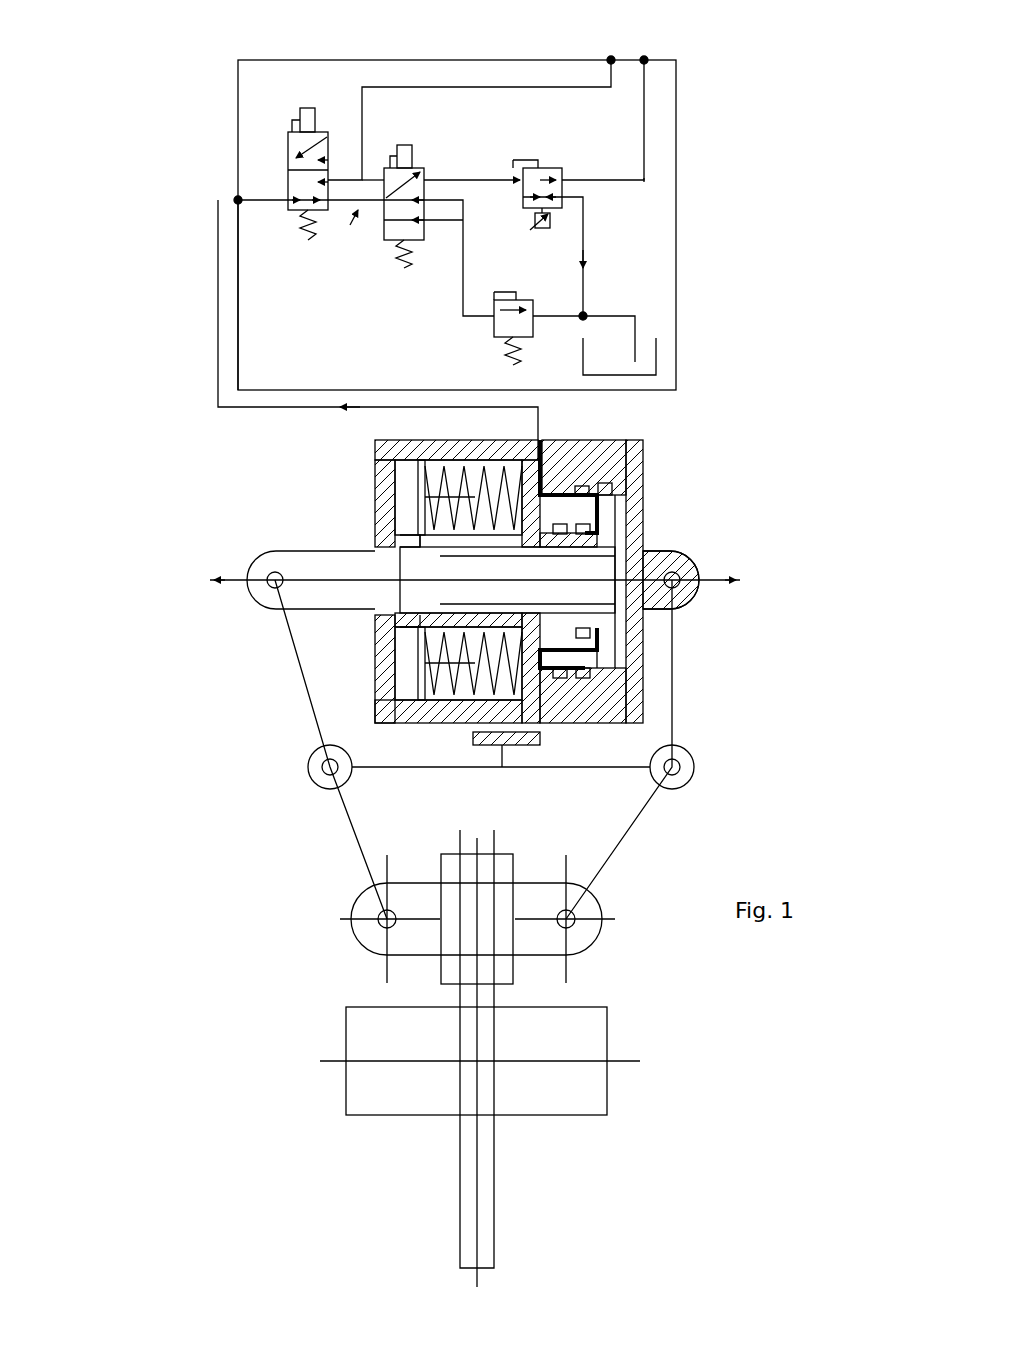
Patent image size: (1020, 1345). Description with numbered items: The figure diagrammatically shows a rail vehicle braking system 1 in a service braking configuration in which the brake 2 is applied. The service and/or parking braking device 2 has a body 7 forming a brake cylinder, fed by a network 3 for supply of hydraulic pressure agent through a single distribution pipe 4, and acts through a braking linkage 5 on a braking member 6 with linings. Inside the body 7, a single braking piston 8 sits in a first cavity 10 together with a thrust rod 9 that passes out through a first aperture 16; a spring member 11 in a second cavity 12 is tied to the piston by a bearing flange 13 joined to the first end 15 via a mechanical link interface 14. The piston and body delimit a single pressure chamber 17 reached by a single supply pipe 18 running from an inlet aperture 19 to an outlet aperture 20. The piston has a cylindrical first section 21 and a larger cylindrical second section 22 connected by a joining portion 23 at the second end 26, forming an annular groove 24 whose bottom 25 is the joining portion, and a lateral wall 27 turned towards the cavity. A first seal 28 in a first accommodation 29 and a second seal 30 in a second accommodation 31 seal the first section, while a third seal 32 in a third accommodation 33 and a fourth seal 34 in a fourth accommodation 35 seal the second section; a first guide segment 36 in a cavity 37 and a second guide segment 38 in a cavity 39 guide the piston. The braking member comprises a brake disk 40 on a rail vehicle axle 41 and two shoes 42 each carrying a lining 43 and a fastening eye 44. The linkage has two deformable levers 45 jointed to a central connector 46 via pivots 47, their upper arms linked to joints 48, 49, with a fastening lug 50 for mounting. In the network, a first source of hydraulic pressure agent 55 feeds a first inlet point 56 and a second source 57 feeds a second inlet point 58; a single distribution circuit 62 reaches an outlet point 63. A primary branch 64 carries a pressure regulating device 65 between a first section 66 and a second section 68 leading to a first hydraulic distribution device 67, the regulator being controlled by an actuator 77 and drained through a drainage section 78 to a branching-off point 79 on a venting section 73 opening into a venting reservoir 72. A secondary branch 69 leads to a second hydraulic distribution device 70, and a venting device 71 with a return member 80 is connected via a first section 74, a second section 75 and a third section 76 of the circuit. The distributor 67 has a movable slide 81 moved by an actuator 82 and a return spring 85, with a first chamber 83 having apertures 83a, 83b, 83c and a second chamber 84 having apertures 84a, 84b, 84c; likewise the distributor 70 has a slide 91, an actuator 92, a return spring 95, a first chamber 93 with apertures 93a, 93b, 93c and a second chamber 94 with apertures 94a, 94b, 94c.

The rail vehicle braking system 1 is at (148, 428).
The service and/or parking braking device 2 is at (720, 478).
The network for supply of hydraulic pressure agent 3 is at (238, 60).
The single distribution pipe 4 is at (218, 290).
The braking linkage 5 is at (155, 628).
The braking member 6 is at (178, 930).
The body 7 is at (600, 490).
The braking piston 8 is at (615, 535).
The thrust rod 9 is at (305, 551).
The first cavity 10 is at (643, 650).
The spring member 11 is at (466, 470).
The second cavity 12 is at (421, 462).
The bearing flange 13 is at (395, 478).
The mechanical link interface 14 is at (400, 540).
The first end 15 is at (400, 548).
The first aperture 16 is at (380, 617).
The single pressure chamber 17 is at (540, 723).
The single supply pipe 18 is at (540, 445).
The single inlet aperture 19 is at (538, 438).
The single outlet aperture 20 is at (580, 486).
The cylindrical first section 21 is at (445, 556).
The cylindrical second section 22 is at (610, 492).
The joining portion 23 is at (610, 510).
The annular groove 24 is at (507, 580).
The bottom 25 is at (600, 660).
The second end 26 is at (630, 548).
The lateral wall 27 is at (643, 612).
The first seal 28 is at (583, 535).
The first accommodation 29 is at (583, 628).
The second seal 30 is at (545, 578).
The second accommodation 31 is at (580, 612).
The third seal 32 is at (600, 690).
The third accommodation 33 is at (612, 488).
The fourth seal 34 is at (598, 678).
The fourth accommodation 35 is at (615, 490).
The first guide segment 36 is at (470, 604).
The cavity 37 is at (450, 670).
The second guide segment 38 is at (604, 483).
The cavity 39 is at (583, 680).
The brake disk 40 is at (460, 1178).
The rail vehicle axle 41 is at (600, 1032).
The shoes 42 is at (648, 862).
The lining 43 is at (458, 856).
The fastening eye 44 is at (352, 905).
The deformable levers 45 is at (308, 660).
The central connector 46 is at (420, 768).
The pivots 47 is at (308, 770).
The joint 48 is at (700, 575).
The joint 49 is at (250, 568).
The fastening lug 50 is at (500, 748).
The first source of hydraulic pressure agent 55 is at (645, 58).
The first inlet point 56 is at (646, 60).
The second source of hydraulic pressure agent 57 is at (611, 58).
The second inlet point 58 is at (608, 60).
The single distribution circuit 62 is at (345, 200).
The outlet point 63 is at (236, 200).
The primary branch 64 is at (644, 105).
The pressure regulating device 65 is at (540, 168).
The first section 66 is at (644, 180).
The first hydraulic distribution device 67 is at (445, 180).
The second section 68 is at (516, 160).
The secondary branch 69 is at (535, 87).
The second hydraulic distribution device 70 is at (290, 133).
The venting device 71 is at (494, 330).
The venting reservoir 72 is at (656, 360).
The venting section 73 is at (635, 316).
The first section 74 is at (252, 205).
The second section 75 is at (366, 214).
The third section 76 is at (463, 290).
The actuator 77 is at (548, 228).
The drainage section 78 is at (584, 235).
The branching-off point 79 is at (585, 314).
The return member 80 is at (505, 355).
The movable slide 81 is at (386, 168).
The actuator 82 is at (403, 145).
The first chamber 83 is at (404, 240).
The aperture 83a is at (440, 222).
The aperture 83b is at (440, 240).
The aperture 83c is at (394, 240).
The second chamber 84 is at (420, 168).
The aperture 84a is at (468, 180).
The aperture 84b is at (440, 200).
The aperture 84c is at (386, 190).
The return spring 85 is at (412, 255).
The movable slide 91 is at (328, 132).
The actuator 92 is at (302, 110).
The first chamber 93 is at (288, 188).
The aperture 93a is at (326, 210).
The aperture 93b is at (312, 210).
The aperture 93c is at (290, 210).
The second chamber 94 is at (290, 145).
The aperture 94a is at (332, 170).
The aperture 94b is at (362, 160).
The aperture 94c is at (290, 160).
The return spring 95 is at (300, 240).